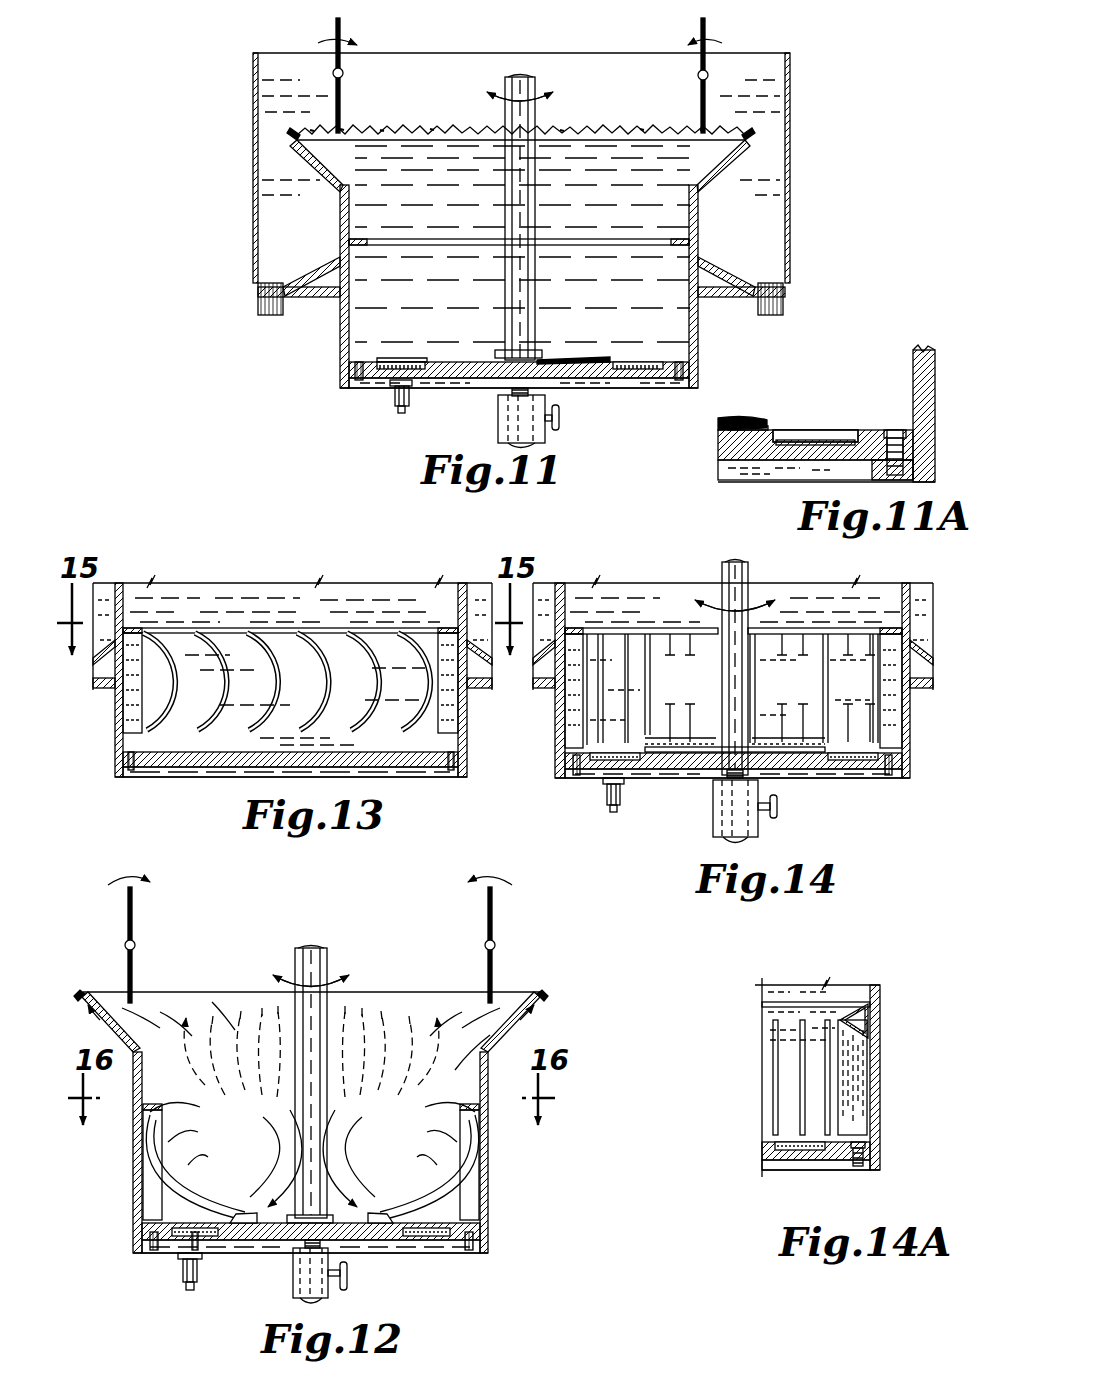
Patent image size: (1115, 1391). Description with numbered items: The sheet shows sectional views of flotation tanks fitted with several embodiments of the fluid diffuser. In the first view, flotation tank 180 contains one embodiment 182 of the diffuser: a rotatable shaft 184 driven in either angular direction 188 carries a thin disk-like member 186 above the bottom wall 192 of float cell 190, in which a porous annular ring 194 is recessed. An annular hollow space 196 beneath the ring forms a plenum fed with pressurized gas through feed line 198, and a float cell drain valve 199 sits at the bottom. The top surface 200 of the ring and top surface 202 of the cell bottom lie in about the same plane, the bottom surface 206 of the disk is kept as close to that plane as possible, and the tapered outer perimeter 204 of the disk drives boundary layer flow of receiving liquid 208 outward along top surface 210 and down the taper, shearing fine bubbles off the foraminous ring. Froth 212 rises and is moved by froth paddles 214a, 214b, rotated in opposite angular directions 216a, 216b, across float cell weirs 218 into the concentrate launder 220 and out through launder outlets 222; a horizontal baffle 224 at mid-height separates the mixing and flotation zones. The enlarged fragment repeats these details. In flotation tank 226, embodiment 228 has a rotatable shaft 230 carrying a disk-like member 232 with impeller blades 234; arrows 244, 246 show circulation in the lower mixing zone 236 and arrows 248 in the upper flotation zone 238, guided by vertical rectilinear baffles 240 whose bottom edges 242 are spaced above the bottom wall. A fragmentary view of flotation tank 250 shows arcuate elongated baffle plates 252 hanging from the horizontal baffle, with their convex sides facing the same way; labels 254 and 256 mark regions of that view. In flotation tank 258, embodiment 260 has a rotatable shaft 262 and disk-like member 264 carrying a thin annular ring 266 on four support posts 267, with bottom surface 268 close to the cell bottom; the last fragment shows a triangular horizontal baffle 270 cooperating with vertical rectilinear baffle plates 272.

In FIG. 11, the flotation tank 180 is at (253, 104).
In FIG. 11, the fluid diffuser embodiment 182 is at (490, 332).
In FIG. 11, the rotatable shaft 184 is at (528, 210).
In FIG. 11, the thin disk-like member 186 is at (592, 355).
In FIG. 11A, the thin disk-like member 186 is at (716, 420).
In FIG. 11, the angular direction 188 is at (538, 92).
In FIG. 14, the angular direction 188 is at (752, 600).
In FIG. 12, the angular direction 188 is at (345, 960).
In FIG. 11, the float cell 190 is at (342, 338).
In FIG. 11A, the float cell 190 is at (928, 377).
In FIG. 13, the float cell 190 is at (118, 735).
In FIG. 14, the float cell 190 is at (557, 746).
In FIG. 12, the float cell 190 is at (138, 1195).
In FIG. 14A, the float cell 190 is at (873, 1115).
In FIG. 11, the bottom wall 192 is at (480, 382).
In FIG. 11A, the bottom wall 192 is at (743, 443).
In FIG. 13, the bottom wall 192 is at (213, 758).
In FIG. 14, the bottom wall 192 is at (698, 762).
In FIG. 12, the bottom wall 192 is at (400, 1238).
In FIG. 11, the porous annular ring 194 is at (425, 385).
In FIG. 11A, the porous annular ring 194 is at (783, 448).
In FIG. 14, the porous annular ring 194 is at (645, 767).
In FIG. 12, the porous annular ring 194 is at (182, 1222).
In FIG. 14A, the porous annular ring 194 is at (773, 1148).
In FIG. 11, the annular hollow space 196 is at (630, 370).
In FIG. 11A, the annular hollow space 196 is at (808, 443).
In FIG. 14, the annular hollow space 196 is at (623, 762).
In FIG. 12, the annular hollow space 196 is at (202, 1240).
In FIG. 14A, the annular hollow space 196 is at (810, 1148).
In FIG. 11, the feed line 198 is at (395, 395).
In FIG. 14, the feed line 198 is at (608, 788).
In FIG. 12, the feed line 198 is at (185, 1272).
In FIG. 11, the float cell drain valve 199 is at (560, 422).
In FIG. 14, the float cell drain valve 199 is at (775, 812).
In FIG. 12, the float cell drain valve 199 is at (360, 1287).
In FIG. 11, the top surface of ring 200 is at (402, 362).
In FIG. 11A, the top surface of ring 200 is at (820, 430).
In FIG. 14, the top surface of ring 200 is at (578, 773).
In FIG. 12, the top surface of ring 200 is at (150, 1218).
In FIG. 11, the top surface of cell bottom 202 is at (460, 362).
In FIG. 11A, the top surface of cell bottom 202 is at (870, 430).
In FIG. 14, the top surface of cell bottom 202 is at (883, 740).
In FIG. 11, the outer perimeter of disk member 204 is at (618, 362).
In FIG. 11A, the outer perimeter of disk member 204 is at (757, 425).
In FIG. 11, the bottom surface of disk-like member 206 is at (573, 397).
In FIG. 11A, the bottom surface of disk-like member 206 is at (723, 433).
In FIG. 12, the bottom surface of disk-like member 206 is at (360, 1243).
In FIG. 11, the receiving liquid 208 is at (607, 282).
In FIG. 11A, the receiving liquid 208 is at (878, 381).
In FIG. 11, the top surface of disk member 210 is at (565, 358).
In FIG. 11A, the top surface of disk member 210 is at (728, 418).
In FIG. 11, the froth 212 is at (472, 122).
In FIG. 11, the froth paddle 214a is at (341, 22).
In FIG. 11, the froth paddle 214b is at (702, 22).
In FIG. 11, the angular direction 216a is at (345, 40).
In FIG. 12, the angular direction 216a is at (130, 877).
In FIG. 11, the opposite angular direction 216b is at (700, 38).
In FIG. 12, the opposite angular direction 216b is at (510, 883).
In FIG. 11, the float cell weirs 218 is at (750, 133).
In FIG. 12, the float cell weirs 218 is at (82, 995).
In FIG. 11, the float cell concentrate launder 220 is at (320, 224).
In FIG. 11, the launder outlets 222 is at (262, 312).
In FIG. 11, the horizontal baffle 224 is at (365, 242).
In FIG. 13, the horizontal baffle 224 is at (357, 628).
In FIG. 14, the horizontal baffle 224 is at (578, 628).
In FIG. 12, the horizontal baffle 224 is at (150, 1108).
In FIG. 12, the flotation tank 226 is at (215, 968).
In FIG. 12, the fluid diffuser embodiment 228 is at (270, 1257).
In FIG. 12, the rotatable shaft 230 is at (327, 1003).
In FIG. 12, the thin disk-like member 232 is at (352, 1212).
In FIG. 12, the impeller blades 234 is at (378, 1224).
In FIG. 12, the lower mixing zone 236 is at (247, 1146).
In FIG. 12, the upper flotation zone 238 is at (185, 1071).
In FIG. 14, the vertical rectilinear baffles 240 is at (572, 703).
In FIG. 12, the vertical rectilinear baffles 240 is at (145, 1178).
In FIG. 12, the bottom edge 242 is at (483, 1226).
In FIG. 12, the flow arrows 244 is at (430, 1110).
In FIG. 12, the flow arrows 246 is at (346, 1150).
In FIG. 12, the flow arrows 248 is at (443, 1010).
In FIG. 13, the flotation tank 250 is at (287, 580).
In FIG. 13, the arcuate elongated baffle plates 252 is at (213, 655).
In FIG. 13, the interior region 254 is at (317, 694).
In FIG. 13, the upper liquid region 256 is at (267, 616).
In FIG. 14, the flotation tank 258 is at (672, 578).
In FIG. 14, the fluid diffuser embodiment 260 is at (702, 720).
In FIG. 14, the rotatable shaft 262 is at (738, 676).
In FIG. 14, the thin disk-like member 264 is at (763, 740).
In FIG. 14, the thin annular ring 266 is at (815, 737).
In FIG. 14, the support posts 267 is at (660, 732).
In FIG. 14, the bottom surface of disk member 268 is at (738, 765).
In FIG. 14A, the horizontal baffle 270 is at (843, 1007).
In FIG. 14A, the vertical rectilinear baffle plates 272 is at (803, 1053).